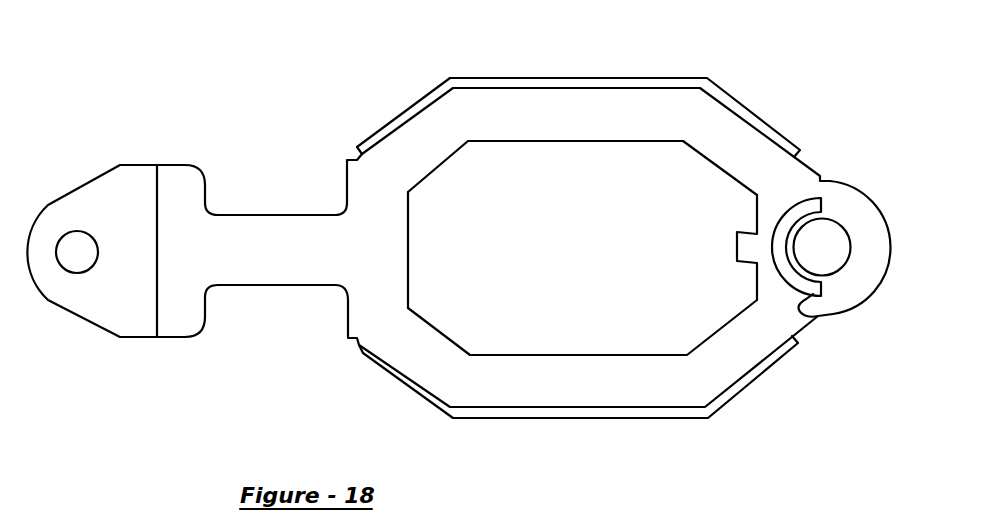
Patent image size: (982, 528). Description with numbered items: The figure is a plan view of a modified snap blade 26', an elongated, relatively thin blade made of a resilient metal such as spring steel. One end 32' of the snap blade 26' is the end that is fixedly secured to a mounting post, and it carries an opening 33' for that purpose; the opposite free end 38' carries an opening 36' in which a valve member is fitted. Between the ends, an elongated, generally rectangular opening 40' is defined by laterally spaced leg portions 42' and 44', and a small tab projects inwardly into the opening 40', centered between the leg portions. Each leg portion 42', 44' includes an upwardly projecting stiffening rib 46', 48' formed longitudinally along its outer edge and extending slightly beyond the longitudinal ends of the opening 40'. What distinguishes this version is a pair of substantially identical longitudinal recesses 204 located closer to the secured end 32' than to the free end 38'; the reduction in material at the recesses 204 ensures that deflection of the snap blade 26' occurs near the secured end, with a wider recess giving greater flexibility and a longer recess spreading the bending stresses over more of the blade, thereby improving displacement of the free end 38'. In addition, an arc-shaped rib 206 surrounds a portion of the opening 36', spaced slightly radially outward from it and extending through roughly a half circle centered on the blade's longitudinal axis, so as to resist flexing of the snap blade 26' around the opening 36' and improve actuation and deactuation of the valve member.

The snap blade 26' is at (554, 231).
The end 32' is at (122, 209).
The opening 33' is at (74, 195).
The longitudinal recesses 204 is at (267, 215).
The stiffening rib 46' is at (578, 93).
The stiffening rib 48' is at (578, 406).
The opening 40' is at (582, 250).
The leg portion 42' is at (582, 166).
The leg portion 44' is at (582, 334).
The free end 38' is at (807, 194).
The opening 36' is at (838, 214).
The arc-shaped rib 206 is at (822, 314).